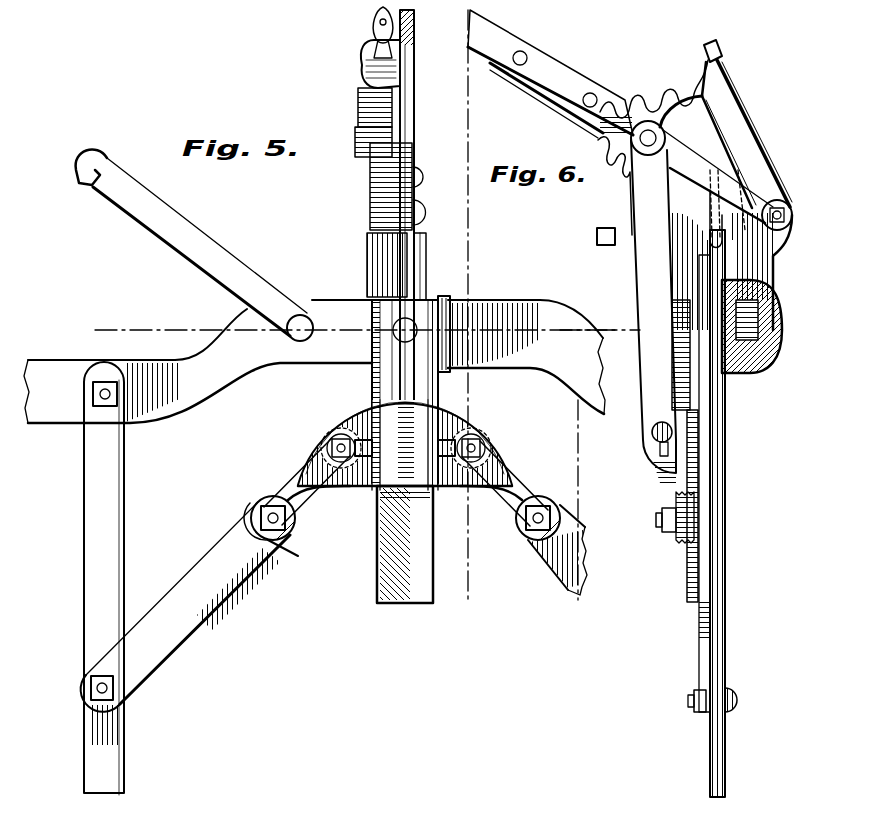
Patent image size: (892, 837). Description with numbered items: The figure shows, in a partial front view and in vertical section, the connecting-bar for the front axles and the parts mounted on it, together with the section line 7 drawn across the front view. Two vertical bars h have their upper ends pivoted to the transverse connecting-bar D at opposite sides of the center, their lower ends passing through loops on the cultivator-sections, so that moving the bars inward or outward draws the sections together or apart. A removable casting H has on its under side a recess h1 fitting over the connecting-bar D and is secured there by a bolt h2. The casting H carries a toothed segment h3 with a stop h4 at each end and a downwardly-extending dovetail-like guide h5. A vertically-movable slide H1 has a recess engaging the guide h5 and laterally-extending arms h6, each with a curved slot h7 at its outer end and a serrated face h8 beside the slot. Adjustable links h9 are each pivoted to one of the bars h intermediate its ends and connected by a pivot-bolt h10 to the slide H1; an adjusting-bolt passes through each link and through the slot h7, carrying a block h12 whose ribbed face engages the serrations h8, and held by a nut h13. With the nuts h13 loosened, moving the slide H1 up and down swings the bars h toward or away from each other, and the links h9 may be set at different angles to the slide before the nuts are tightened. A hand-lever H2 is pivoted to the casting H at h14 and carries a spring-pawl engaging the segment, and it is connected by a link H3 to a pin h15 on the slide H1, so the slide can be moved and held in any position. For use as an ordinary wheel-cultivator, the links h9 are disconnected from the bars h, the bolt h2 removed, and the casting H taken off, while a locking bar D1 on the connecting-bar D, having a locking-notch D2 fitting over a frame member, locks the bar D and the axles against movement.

In FIG. 5, the section line 7 7 is at (354, 329).
In FIG. 6, the section line 7 7 is at (600, 334).
In FIG. 5, the vertical bar h is at (85, 530).
In FIG. 5, the recess h1 is at (260, 518).
In FIG. 6, the recess h1 is at (775, 330).
In FIG. 6, the bolt h2 is at (772, 370).
In FIG. 6, the segment h3 is at (645, 95).
In FIG. 6, the stop h4 is at (712, 43).
In FIG. 5, the guide h5 is at (435, 592).
In FIG. 6, the guide h5 is at (688, 596).
In FIG. 5, the laterally-extending arm h6 is at (528, 455).
In FIG. 5, the curved slot h7 is at (545, 545).
In FIG. 5, the serrations or ribs h8 is at (300, 528).
In FIG. 5, the adjustable link h9 is at (190, 640).
In FIG. 5, the pivot-bolt h10 is at (500, 410).
In FIG. 5, the block h12 is at (273, 555).
In FIG. 6, the block h12 is at (670, 505).
In FIG. 6, the nut h13 is at (660, 530).
In FIG. 6, the pivot h14 is at (785, 195).
In FIG. 6, the pin h15 is at (652, 432).
In FIG. 5, the removable casting H is at (450, 295).
In FIG. 5, the vertically-movable slide H1 is at (365, 408).
In FIG. 6, the vertically-movable slide H1 is at (515, 40).
In FIG. 5, the hand-lever H2 is at (414, 32).
In FIG. 5, the link H3 is at (418, 278).
In FIG. 6, the link H3 is at (632, 285).
In FIG. 6, the transverse connecting-bar D is at (735, 362).
In FIG. 5, the locking bar or link D1 is at (180, 230).
In FIG. 6, the locking bar or link D1 is at (690, 205).
In FIG. 5, the locking-notch D2 is at (105, 165).